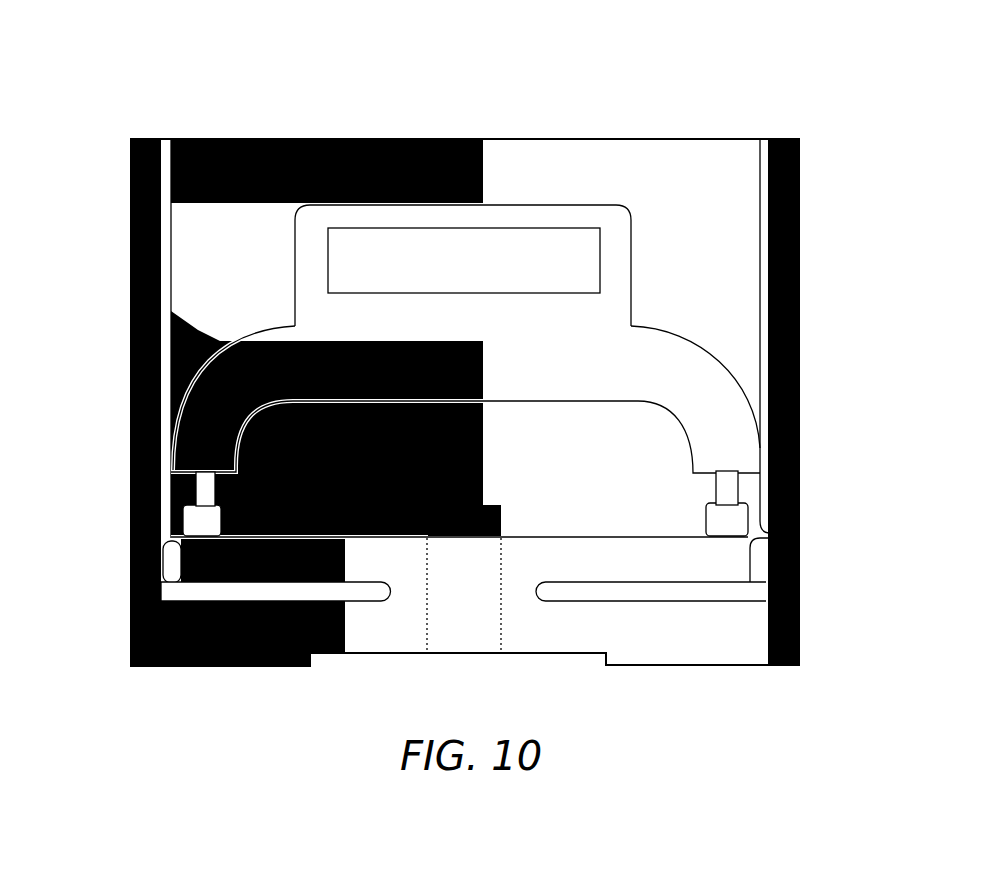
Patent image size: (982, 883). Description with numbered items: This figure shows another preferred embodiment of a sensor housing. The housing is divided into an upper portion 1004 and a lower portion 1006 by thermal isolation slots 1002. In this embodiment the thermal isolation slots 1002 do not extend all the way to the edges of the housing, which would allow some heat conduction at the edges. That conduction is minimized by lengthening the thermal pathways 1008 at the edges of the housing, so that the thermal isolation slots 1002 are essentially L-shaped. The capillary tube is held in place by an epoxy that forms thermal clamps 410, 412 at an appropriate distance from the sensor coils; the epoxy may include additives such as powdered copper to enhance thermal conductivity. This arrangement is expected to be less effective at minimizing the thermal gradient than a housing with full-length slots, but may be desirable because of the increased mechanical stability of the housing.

The upper portion 1004 is at (704, 135).
The lower portion 1006 is at (772, 648).
The thermal pathways 1008 is at (160, 530).
The thermal isolation slots 1002 is at (183, 580).
The thermal clamp 410 is at (190, 505).
The thermal clamp 412 is at (719, 505).